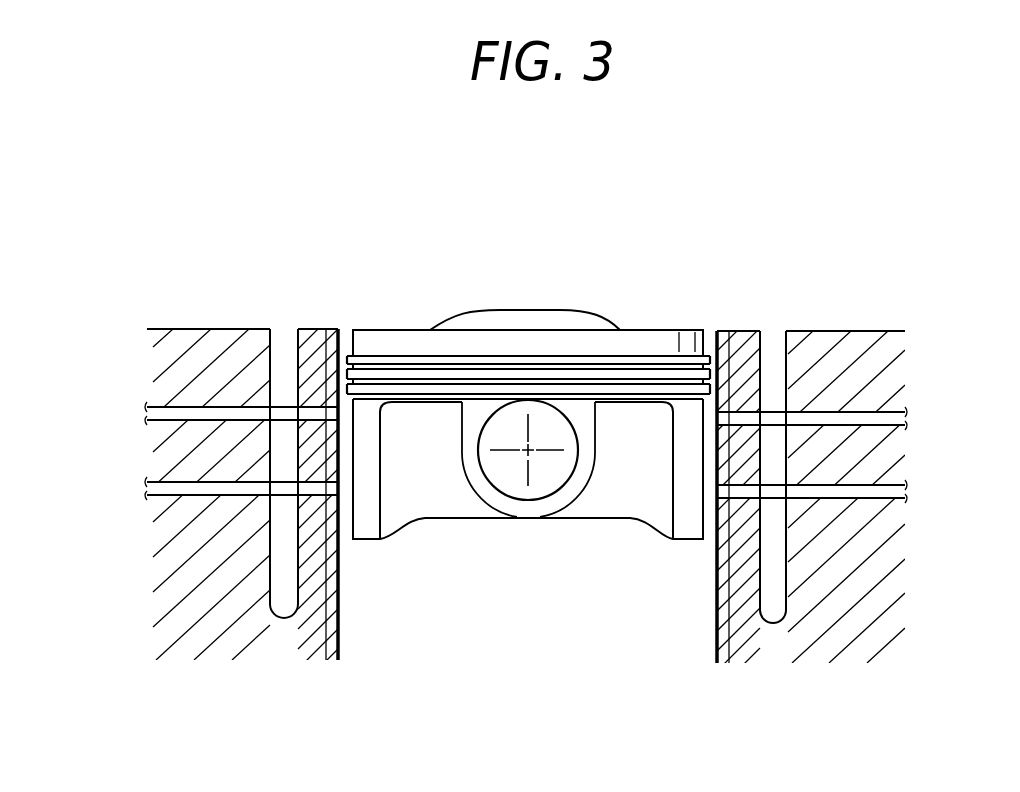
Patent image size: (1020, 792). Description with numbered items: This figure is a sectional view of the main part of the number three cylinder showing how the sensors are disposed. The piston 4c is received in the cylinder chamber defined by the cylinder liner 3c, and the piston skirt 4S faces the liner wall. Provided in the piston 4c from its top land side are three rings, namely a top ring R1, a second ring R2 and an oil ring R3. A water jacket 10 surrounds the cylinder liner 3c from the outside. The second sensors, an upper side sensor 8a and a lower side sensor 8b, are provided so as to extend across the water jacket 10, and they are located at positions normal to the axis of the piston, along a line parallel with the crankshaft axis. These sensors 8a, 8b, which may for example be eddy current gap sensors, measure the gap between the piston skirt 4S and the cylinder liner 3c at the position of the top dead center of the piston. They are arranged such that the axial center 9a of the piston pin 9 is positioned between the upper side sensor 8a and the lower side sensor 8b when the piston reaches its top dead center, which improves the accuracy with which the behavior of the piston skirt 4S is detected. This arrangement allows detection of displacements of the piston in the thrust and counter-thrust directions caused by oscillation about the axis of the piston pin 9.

The cylinder liner 3c is at (338, 597).
The water jacket 10 is at (282, 350).
The upper side sensor 8a is at (212, 420).
The lower side sensor 8b is at (188, 482).
The piston skirt 4S is at (353, 512).
The piston 4c is at (646, 352).
The top ring R1 is at (372, 355).
The second ring R2 is at (400, 374).
The oil ring R3 is at (440, 385).
The piston pin 9 is at (545, 483).
The axial center 9a is at (521, 455).